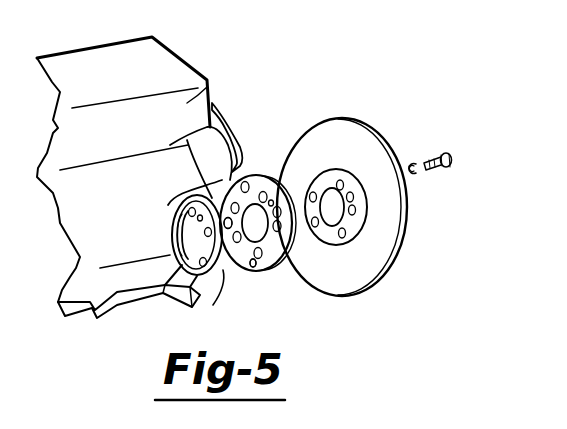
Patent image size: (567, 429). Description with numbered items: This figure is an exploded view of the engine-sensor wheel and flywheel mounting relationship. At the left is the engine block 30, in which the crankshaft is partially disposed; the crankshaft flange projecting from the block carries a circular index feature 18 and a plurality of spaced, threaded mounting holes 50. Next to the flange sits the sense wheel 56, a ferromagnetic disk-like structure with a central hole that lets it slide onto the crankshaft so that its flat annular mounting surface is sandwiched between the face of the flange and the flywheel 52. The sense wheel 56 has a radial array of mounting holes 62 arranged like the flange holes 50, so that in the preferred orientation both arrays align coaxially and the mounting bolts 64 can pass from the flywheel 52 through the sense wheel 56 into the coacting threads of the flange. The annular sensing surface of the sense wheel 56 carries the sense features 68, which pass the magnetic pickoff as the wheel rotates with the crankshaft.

The engine block 30 is at (210, 85).
The circular index feature 18 is at (232, 162).
The mounting holes 50 is at (201, 262).
The flywheel 52 is at (333, 136).
The sense wheel 56 is at (262, 278).
The mounting holes 62 is at (226, 274).
The mounting bolts 64 is at (465, 122).
The sense features 68 is at (252, 273).